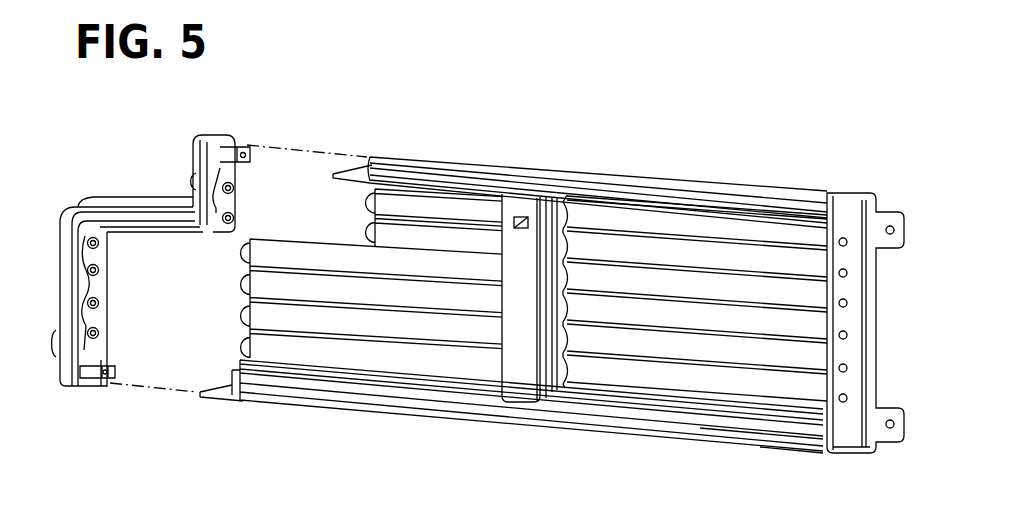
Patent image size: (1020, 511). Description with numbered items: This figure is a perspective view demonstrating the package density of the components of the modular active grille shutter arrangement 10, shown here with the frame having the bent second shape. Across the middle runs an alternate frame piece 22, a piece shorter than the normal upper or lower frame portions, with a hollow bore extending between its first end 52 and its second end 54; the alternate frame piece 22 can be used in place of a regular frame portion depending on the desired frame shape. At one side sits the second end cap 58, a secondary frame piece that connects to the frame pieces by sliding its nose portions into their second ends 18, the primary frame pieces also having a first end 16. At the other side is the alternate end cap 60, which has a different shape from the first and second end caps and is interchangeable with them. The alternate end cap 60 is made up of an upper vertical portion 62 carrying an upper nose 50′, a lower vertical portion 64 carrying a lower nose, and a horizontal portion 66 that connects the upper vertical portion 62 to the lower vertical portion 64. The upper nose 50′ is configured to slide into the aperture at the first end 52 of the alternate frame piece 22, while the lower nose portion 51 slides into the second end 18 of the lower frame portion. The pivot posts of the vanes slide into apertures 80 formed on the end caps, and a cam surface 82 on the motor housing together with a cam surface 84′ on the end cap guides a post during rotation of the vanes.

The modular active grille shutter arrangement 10 is at (705, 125).
The first end 16 is at (238, 378).
The second end 18 is at (812, 435).
The alternate frame piece 22 is at (520, 160).
The upper nose 50′ is at (236, 148).
The lower nose portion 51 is at (90, 378).
The first end 52 is at (362, 160).
The second end 54 is at (838, 190).
The second end cap 58 is at (855, 305).
The alternate end cap 60 is at (100, 178).
The upper vertical portion 62 is at (207, 140).
The lower vertical portion 64 is at (68, 258).
The horizontal portion 66 is at (145, 205).
The aperture 80 is at (99, 270).
The cam surface 82 is at (552, 210).
The cam surface 84′ is at (82, 237).